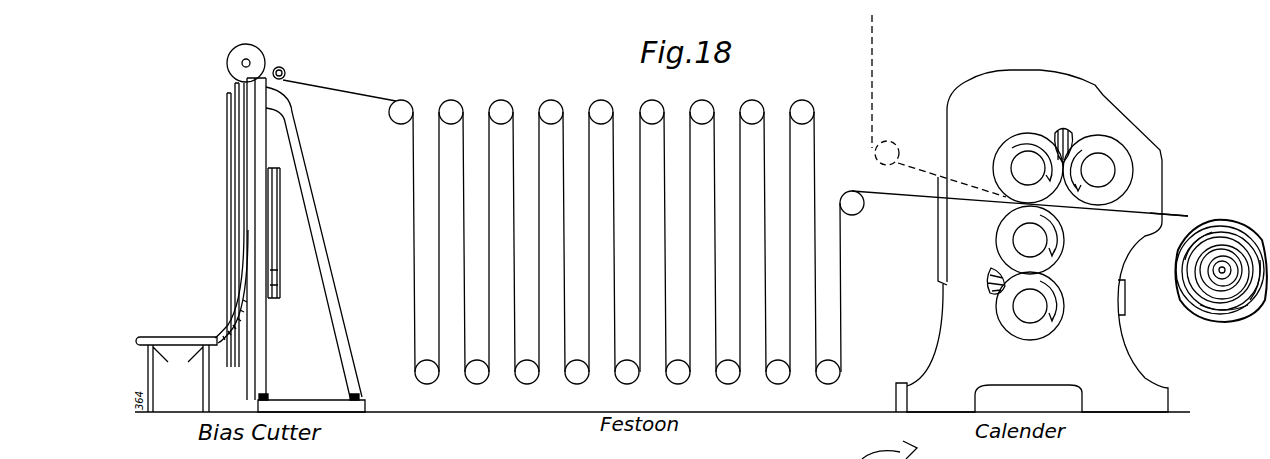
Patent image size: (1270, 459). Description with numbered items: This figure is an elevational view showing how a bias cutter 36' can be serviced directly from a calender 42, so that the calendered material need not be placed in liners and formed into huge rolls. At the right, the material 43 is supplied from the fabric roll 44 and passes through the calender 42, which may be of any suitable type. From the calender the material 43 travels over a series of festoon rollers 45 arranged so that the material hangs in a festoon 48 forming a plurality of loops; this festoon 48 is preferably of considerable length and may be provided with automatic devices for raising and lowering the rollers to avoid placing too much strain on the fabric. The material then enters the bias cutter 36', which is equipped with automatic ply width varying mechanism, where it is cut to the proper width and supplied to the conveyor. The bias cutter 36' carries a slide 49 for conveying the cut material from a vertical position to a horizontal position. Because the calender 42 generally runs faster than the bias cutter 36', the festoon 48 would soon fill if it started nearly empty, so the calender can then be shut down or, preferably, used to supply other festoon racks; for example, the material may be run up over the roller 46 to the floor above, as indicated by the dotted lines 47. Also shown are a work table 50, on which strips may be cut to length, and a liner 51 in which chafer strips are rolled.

The bias cutter 36' is at (311, 228).
The calender 42 is at (1115, 87).
The material 43 is at (1180, 211).
The fabric roll 44 is at (1210, 310).
The festoon rollers 45 is at (806, 105).
The roller 46 is at (893, 147).
The dotted lines 47 is at (878, 52).
The festoon 48 is at (567, 93).
The slide 49 is at (231, 327).
The work table 50 is at (168, 332).
The liner 51 is at (242, 322).